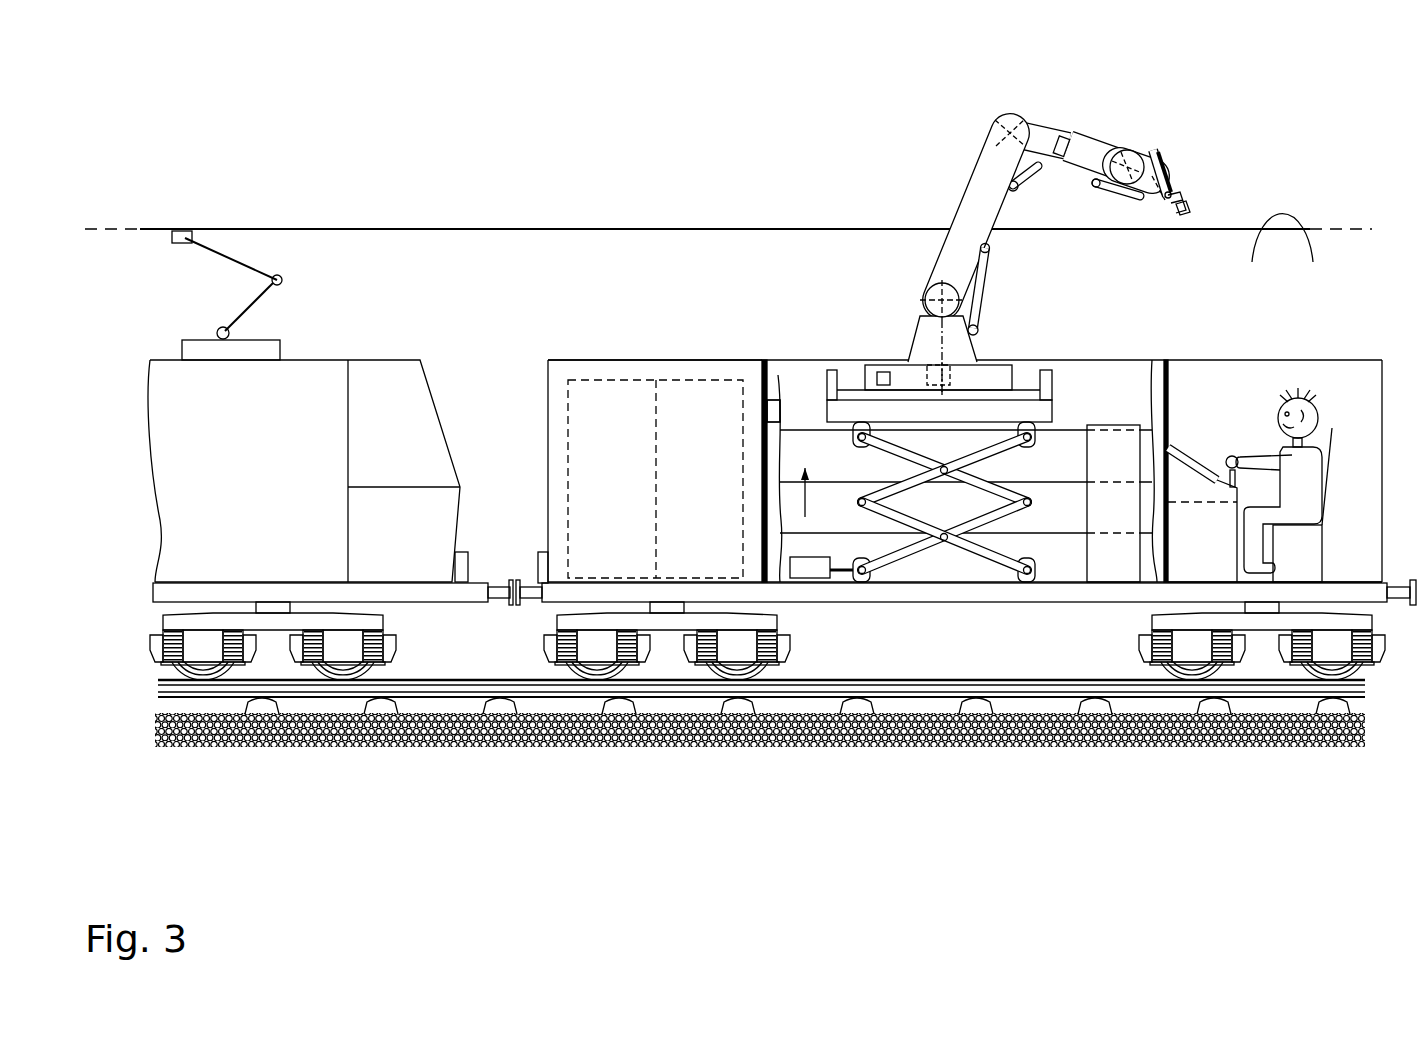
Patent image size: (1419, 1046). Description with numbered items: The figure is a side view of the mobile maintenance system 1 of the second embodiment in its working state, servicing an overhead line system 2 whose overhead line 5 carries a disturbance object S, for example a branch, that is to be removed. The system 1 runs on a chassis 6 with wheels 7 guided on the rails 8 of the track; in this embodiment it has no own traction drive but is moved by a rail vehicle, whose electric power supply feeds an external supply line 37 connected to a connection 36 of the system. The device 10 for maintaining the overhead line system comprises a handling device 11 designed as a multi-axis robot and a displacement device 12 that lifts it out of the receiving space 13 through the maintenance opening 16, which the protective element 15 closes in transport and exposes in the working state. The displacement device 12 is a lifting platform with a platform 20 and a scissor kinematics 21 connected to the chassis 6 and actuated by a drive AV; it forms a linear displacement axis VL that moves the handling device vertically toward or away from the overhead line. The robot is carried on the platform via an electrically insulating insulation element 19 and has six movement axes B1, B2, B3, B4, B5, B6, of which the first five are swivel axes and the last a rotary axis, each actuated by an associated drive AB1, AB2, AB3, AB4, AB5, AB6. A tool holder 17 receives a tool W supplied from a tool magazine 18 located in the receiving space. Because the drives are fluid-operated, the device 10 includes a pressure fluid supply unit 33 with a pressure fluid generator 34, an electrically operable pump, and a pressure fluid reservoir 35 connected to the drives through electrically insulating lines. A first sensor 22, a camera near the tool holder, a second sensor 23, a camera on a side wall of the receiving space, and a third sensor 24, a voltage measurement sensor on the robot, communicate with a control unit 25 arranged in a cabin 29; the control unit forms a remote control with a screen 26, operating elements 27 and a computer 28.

The mobile maintenance system 1 is at (644, 337).
The overhead line system 2 is at (210, 212).
The overhead line 5 is at (272, 229).
The chassis 6 is at (265, 665).
The wheels 7 is at (201, 670).
The rails 8 is at (335, 690).
The device for the maintenance of the overhead line system 10 is at (823, 337).
The handling device 11 is at (1065, 219).
The displacement device 12 is at (931, 649).
The receiving space 13 is at (785, 396).
The protective element 15 is at (1103, 395).
The maintenance opening 16 is at (795, 360).
The tool holder 17 is at (1170, 173).
The tool magazine 18 is at (1120, 568).
The insulation element 19 is at (1047, 383).
The platform 20 is at (1002, 413).
The scissor kinematics 21 is at (962, 543).
The first sensor 22 is at (1165, 162).
The second sensor 23 is at (770, 406).
The third sensor 24 is at (810, 570).
The control unit 25 is at (1212, 580).
The screen 26 is at (1233, 468).
The operating elements 27 is at (1236, 452).
The computer 28 is at (1185, 565).
The cabin 29 is at (1355, 548).
The pressure fluid supply unit 33 is at (620, 359).
The pressure fluid generator 34 is at (603, 562).
The pressure fluid reservoir 35 is at (692, 397).
The connection 36 is at (549, 606).
The external supply line 37 is at (503, 568).
The first movement axis B1 is at (936, 338).
The second movement axis B2 is at (940, 298).
The third movement axis B3 is at (1007, 140).
The fourth movement axis B4 is at (1052, 135).
The fifth movement axis B5 is at (1113, 150).
The sixth movement axis B6 is at (1152, 152).
The drive of movement axis B1 AB1 is at (927, 367).
The drive of movement axis B2 AB2 is at (980, 300).
The drive of movement axis B3 AB3 is at (1033, 192).
The drive of movement axis B4 AB4 is at (1053, 143).
The drive of movement axis B5 AB5 is at (1110, 183).
The drive of movement axis B6 AB6 is at (1140, 193).
The drive of the scissor kinematics AV is at (885, 387).
The displacement axis VL is at (822, 496).
The disturbance object S is at (1293, 203).
The tool W is at (1172, 190).